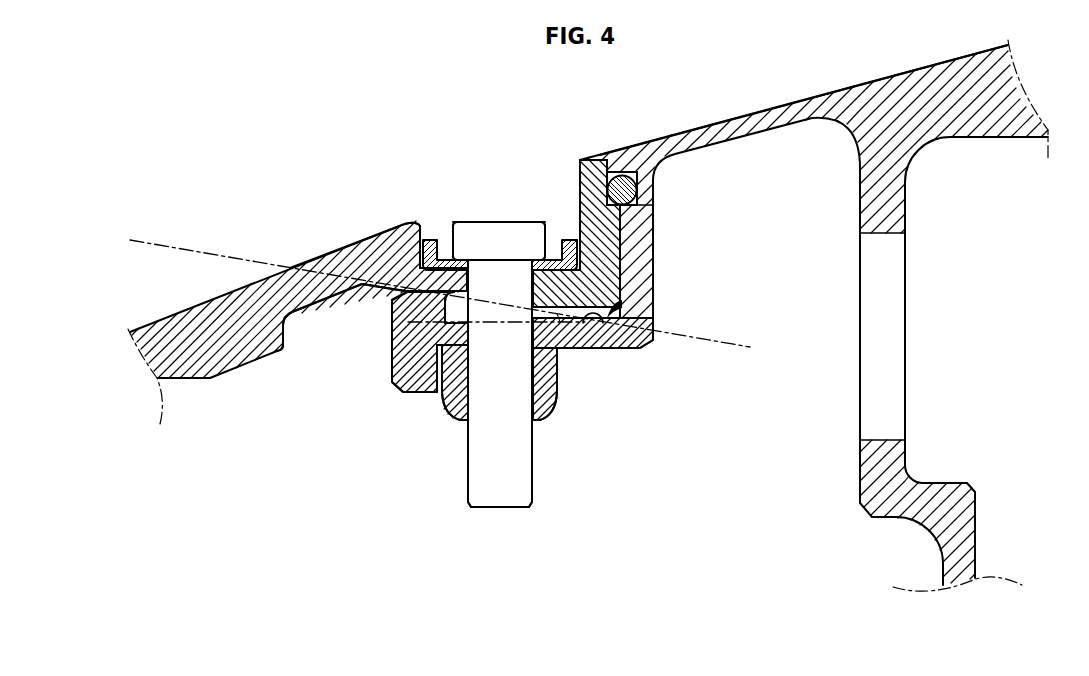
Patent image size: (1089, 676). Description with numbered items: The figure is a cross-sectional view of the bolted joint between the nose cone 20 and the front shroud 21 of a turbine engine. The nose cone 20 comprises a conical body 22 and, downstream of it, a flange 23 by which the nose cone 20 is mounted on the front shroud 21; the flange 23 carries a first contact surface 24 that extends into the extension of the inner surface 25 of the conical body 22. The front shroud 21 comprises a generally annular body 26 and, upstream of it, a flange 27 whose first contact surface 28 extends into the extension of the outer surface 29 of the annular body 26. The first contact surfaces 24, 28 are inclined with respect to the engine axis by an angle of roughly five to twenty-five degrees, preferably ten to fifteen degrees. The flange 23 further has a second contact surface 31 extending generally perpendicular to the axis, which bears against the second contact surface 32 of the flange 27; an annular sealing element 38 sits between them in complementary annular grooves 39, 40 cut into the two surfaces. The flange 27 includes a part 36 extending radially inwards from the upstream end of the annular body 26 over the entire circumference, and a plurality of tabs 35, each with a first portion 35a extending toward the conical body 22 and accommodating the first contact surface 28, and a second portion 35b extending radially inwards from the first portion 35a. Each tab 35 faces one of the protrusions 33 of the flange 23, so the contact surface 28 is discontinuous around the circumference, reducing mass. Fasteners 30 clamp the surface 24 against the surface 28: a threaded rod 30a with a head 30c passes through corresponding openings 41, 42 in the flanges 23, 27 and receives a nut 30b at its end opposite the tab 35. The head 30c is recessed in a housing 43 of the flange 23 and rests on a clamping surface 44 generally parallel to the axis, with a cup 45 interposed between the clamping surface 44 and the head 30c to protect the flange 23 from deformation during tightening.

The nose cone 20 is at (183, 311).
The conical body 22 is at (247, 313).
The inner surface 25 is at (306, 307).
The front shroud 21 is at (753, 110).
The annular body 26 is at (822, 96).
The outer surface 29 is at (702, 128).
The annular groove 40 is at (646, 178).
The flange 27 is at (629, 173).
The annular sealing element 38 is at (607, 175).
The annular groove 39 is at (607, 183).
The flange 23 is at (590, 200).
The second contact surface 32 is at (635, 210).
The second contact surface 31 is at (641, 238).
The part 36 is at (640, 262).
The protrusions 33 is at (603, 315).
The first contact surface 24 is at (601, 323).
The first contact surface 28 is at (577, 321).
The tabs 35 is at (389, 326).
The first portion 35a is at (637, 349).
The second portion 35b is at (415, 338).
The fasteners 30 is at (508, 214).
The threaded rod 30a is at (498, 457).
The nut 30b is at (446, 401).
The head 30c is at (523, 238).
The housings 43 is at (516, 182).
The clamping surface 44 is at (422, 244).
The cups 45 is at (417, 225).
The openings 41 is at (497, 313).
The openings 42 is at (553, 321).